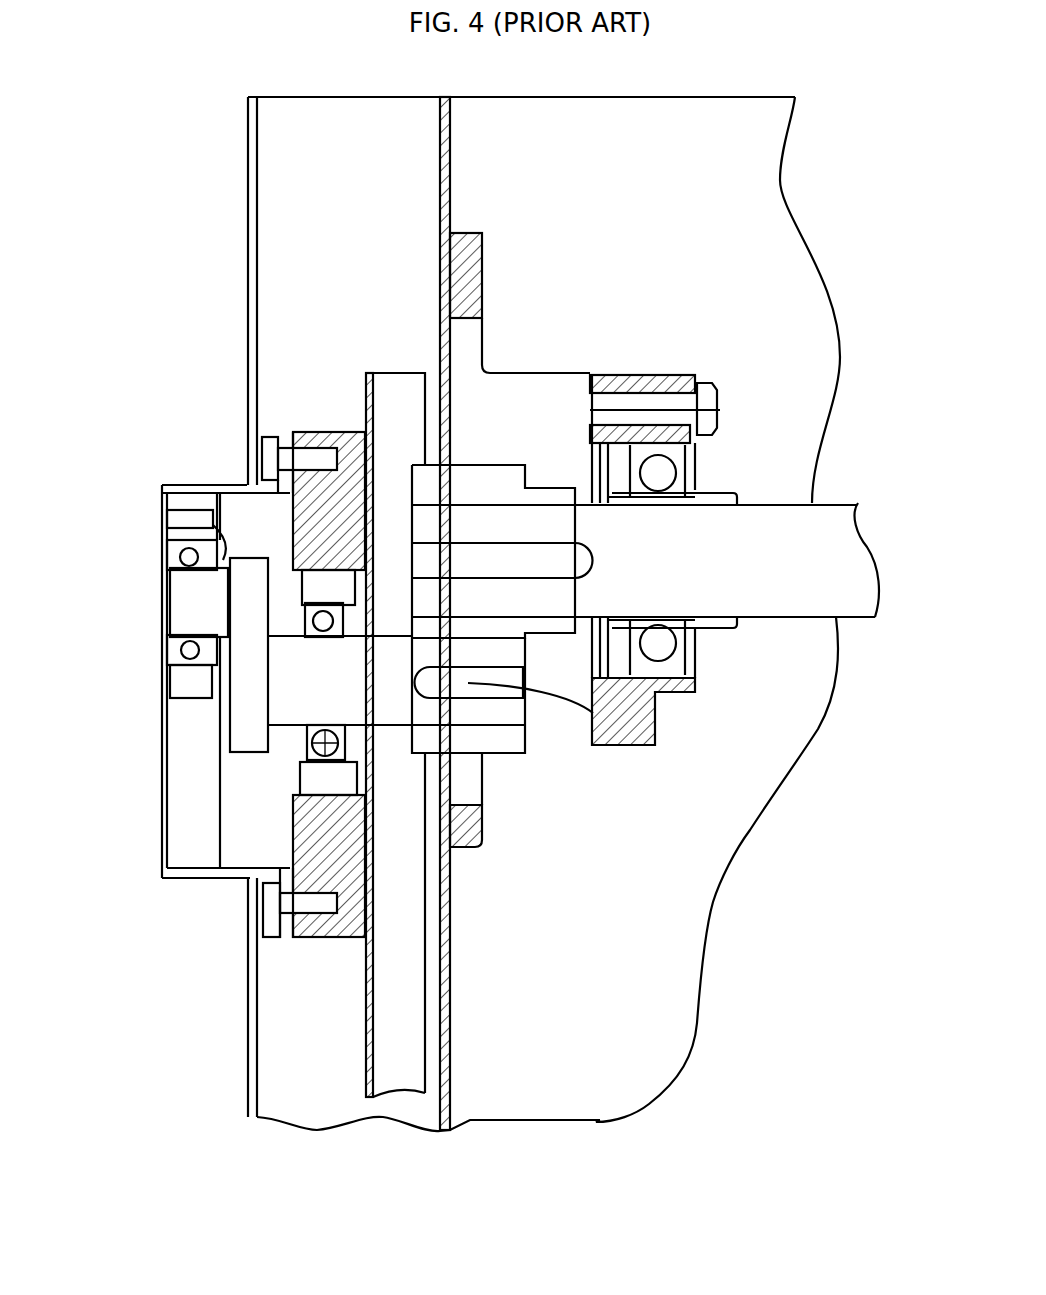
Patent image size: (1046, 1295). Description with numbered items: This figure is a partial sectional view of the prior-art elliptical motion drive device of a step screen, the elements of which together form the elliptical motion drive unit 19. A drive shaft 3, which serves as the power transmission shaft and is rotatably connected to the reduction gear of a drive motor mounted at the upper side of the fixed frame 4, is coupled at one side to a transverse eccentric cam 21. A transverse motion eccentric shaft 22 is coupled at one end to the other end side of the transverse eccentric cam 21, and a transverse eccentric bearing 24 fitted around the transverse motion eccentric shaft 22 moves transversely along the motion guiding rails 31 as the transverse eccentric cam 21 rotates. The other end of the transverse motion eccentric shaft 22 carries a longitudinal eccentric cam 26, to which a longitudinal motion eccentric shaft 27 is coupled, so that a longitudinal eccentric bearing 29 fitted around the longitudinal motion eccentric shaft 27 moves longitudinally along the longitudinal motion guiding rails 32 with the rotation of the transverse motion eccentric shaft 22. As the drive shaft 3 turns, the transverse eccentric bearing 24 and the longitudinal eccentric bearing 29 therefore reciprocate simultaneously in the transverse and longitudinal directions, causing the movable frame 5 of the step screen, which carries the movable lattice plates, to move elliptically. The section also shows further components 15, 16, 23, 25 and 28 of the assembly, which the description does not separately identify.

The drive shaft 3 is at (778, 518).
The fixed frame 4 is at (283, 1073).
The movable frame 5 is at (367, 986).
The upper bearing 15 is at (660, 375).
The lower bearing 16 is at (645, 748).
The elliptical motion drive unit 19 is at (193, 352).
The transverse eccentric cam 21 is at (513, 753).
The transverse motion eccentric shaft 22 is at (510, 713).
The mounting plate 23 is at (390, 728).
The transverse eccentric bearing 24 is at (332, 778).
The bearing 25 is at (283, 731).
The longitudinal eccentric cam 26 is at (237, 712).
The longitudinal motion eccentric shaft 27 is at (185, 590).
The bearing 28 is at (172, 526).
The longitudinal eccentric bearing 29 is at (175, 555).
The motion guiding rails 31 is at (337, 560).
The longitudinal motion guiding rails 32 is at (177, 747).